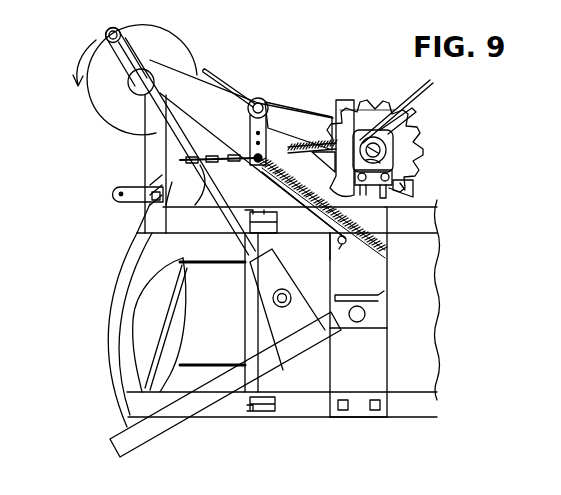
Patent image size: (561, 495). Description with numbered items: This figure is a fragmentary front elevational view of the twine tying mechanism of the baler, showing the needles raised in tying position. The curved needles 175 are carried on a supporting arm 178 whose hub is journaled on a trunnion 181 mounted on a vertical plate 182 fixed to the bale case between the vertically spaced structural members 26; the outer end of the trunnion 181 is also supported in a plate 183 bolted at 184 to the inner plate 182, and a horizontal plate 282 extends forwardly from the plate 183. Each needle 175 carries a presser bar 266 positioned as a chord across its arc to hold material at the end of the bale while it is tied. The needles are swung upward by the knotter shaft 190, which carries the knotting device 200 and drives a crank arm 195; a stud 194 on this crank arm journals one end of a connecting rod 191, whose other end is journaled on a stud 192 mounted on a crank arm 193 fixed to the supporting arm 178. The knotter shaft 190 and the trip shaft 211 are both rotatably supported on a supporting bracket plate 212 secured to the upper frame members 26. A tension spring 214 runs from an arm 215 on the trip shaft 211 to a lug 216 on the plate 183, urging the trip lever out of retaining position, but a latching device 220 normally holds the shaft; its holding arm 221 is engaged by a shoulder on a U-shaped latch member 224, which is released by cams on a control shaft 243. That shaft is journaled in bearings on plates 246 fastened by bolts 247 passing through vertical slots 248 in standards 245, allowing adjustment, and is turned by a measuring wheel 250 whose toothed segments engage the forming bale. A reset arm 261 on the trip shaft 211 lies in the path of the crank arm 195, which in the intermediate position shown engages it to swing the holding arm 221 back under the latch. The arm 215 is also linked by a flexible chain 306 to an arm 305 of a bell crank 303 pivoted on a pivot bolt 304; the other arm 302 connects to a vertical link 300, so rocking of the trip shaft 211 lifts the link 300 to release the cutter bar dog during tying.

The structural members 26 is at (307, 403).
The curved needles 175 is at (108, 337).
The supporting arm 178 is at (168, 422).
The trunnion 181 is at (367, 315).
The vertical plate 182 is at (372, 362).
The plate 183 is at (370, 270).
The bolt 184 is at (335, 252).
The knotter shaft 190 is at (150, 76).
The connecting rod 191 is at (233, 240).
The stud 192 is at (273, 298).
The crank arm 193 is at (283, 320).
The stud 194 is at (108, 31).
The crank arm 195 is at (128, 48).
The knotting device 200 is at (209, 62).
The trip shaft 211 is at (292, 115).
The supporting bracket plate 212 is at (411, 219).
The tension spring 214 is at (327, 187).
The arm 215 is at (249, 131).
The lug 216 is at (395, 245).
The latching device 220 is at (437, 135).
The holding arm 221 is at (313, 95).
The latch member 224 is at (367, 96).
The control shaft 243 is at (383, 157).
The standard 245 is at (388, 198).
The plate 246 is at (390, 103).
The bolt 247 is at (400, 182).
The vertical slot 248 is at (455, 185).
The measuring wheel 250 is at (417, 115).
The reset arm 261 is at (213, 75).
The presser bar 266 is at (170, 300).
The horizontal plate 282 is at (368, 293).
The vertical link 300 is at (112, 204).
The arm 302 is at (133, 190).
The bell crank 303 is at (157, 171).
The pivot bolt 304 is at (145, 203).
The arm 305 is at (188, 198).
The flexible chain 306 is at (217, 167).